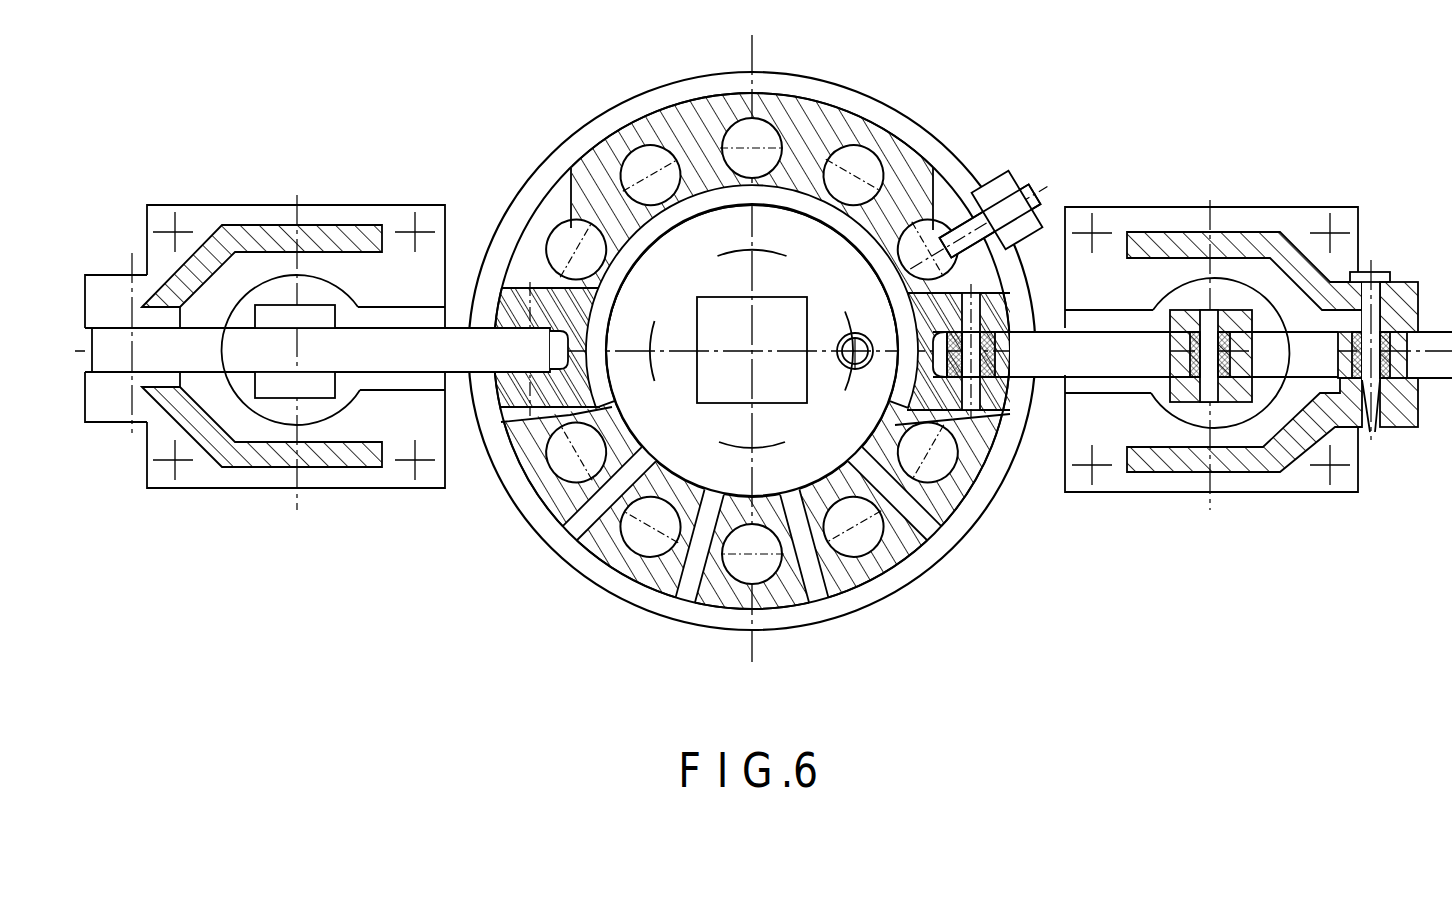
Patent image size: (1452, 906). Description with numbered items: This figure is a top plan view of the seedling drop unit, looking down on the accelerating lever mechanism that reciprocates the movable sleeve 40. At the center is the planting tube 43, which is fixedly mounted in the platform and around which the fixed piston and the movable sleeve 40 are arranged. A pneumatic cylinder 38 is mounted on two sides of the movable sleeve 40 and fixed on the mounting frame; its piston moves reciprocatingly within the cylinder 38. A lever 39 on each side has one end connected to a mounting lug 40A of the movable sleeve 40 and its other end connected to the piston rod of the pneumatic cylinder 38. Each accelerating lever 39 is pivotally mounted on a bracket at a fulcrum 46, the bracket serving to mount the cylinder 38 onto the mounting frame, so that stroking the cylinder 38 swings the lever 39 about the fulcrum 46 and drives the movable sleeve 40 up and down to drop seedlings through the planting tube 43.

The pneumatic cylinder 38 is at (752, 437).
The lever 39 is at (795, 468).
The movable sleeve 40 is at (752, 373).
The mounting lug 40A is at (991, 427).
The planting tube 43 is at (770, 470).
The fulcrum 46 is at (768, 450).